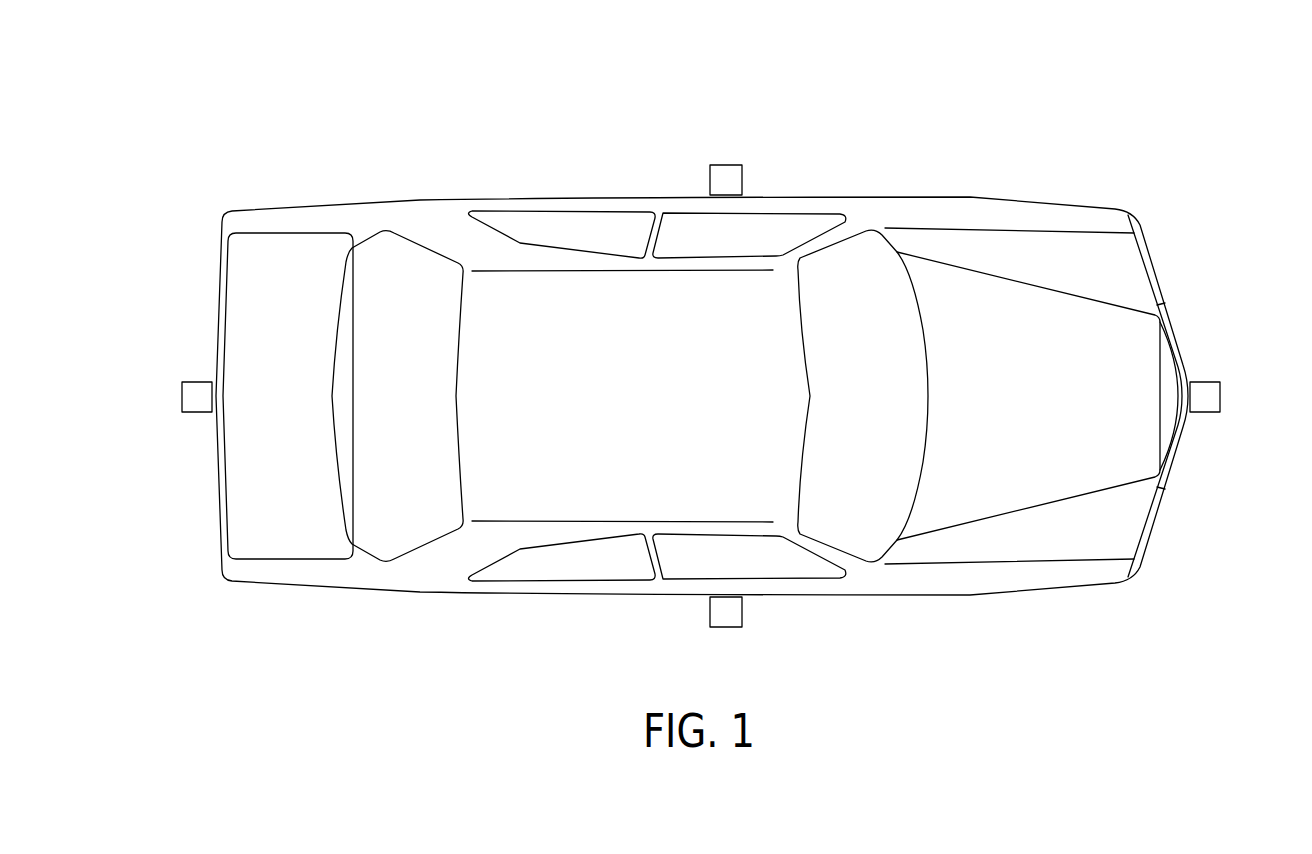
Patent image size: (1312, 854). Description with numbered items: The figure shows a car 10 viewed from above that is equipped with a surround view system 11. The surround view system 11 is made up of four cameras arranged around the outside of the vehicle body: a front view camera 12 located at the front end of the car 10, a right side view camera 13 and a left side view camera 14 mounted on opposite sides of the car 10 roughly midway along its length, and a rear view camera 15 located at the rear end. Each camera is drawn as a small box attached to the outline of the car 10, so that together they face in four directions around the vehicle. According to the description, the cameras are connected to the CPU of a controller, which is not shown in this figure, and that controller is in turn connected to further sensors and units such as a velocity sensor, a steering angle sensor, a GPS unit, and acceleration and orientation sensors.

The car 10 is at (420, 204).
The surround view system 11 is at (812, 105).
The front view camera 12 is at (1222, 396).
The right side view camera 13 is at (742, 612).
The left side view camera 14 is at (728, 163).
The rear view camera 15 is at (180, 392).